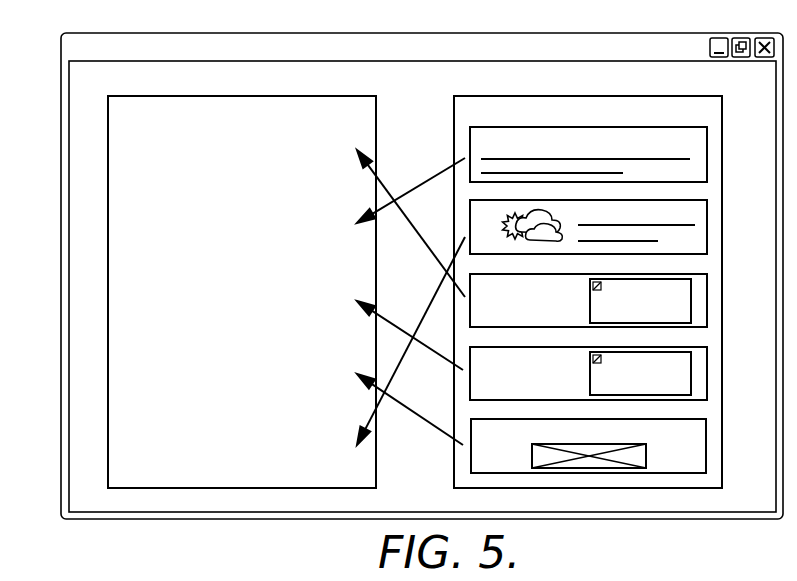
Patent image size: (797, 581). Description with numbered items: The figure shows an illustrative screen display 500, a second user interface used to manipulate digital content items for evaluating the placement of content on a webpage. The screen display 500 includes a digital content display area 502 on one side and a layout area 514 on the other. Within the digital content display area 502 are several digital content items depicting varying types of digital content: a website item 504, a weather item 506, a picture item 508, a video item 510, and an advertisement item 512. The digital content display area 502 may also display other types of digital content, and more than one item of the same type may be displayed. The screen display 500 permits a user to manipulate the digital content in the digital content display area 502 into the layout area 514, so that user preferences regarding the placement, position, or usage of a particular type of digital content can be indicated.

The screen display 500 is at (52, 110).
The digital content display area 502 is at (733, 107).
The website item 504 is at (707, 157).
The weather item 506 is at (707, 230).
The picture item 508 is at (707, 303).
The video item 510 is at (707, 377).
The advertisement item 512 is at (707, 449).
The layout area 514 is at (108, 345).